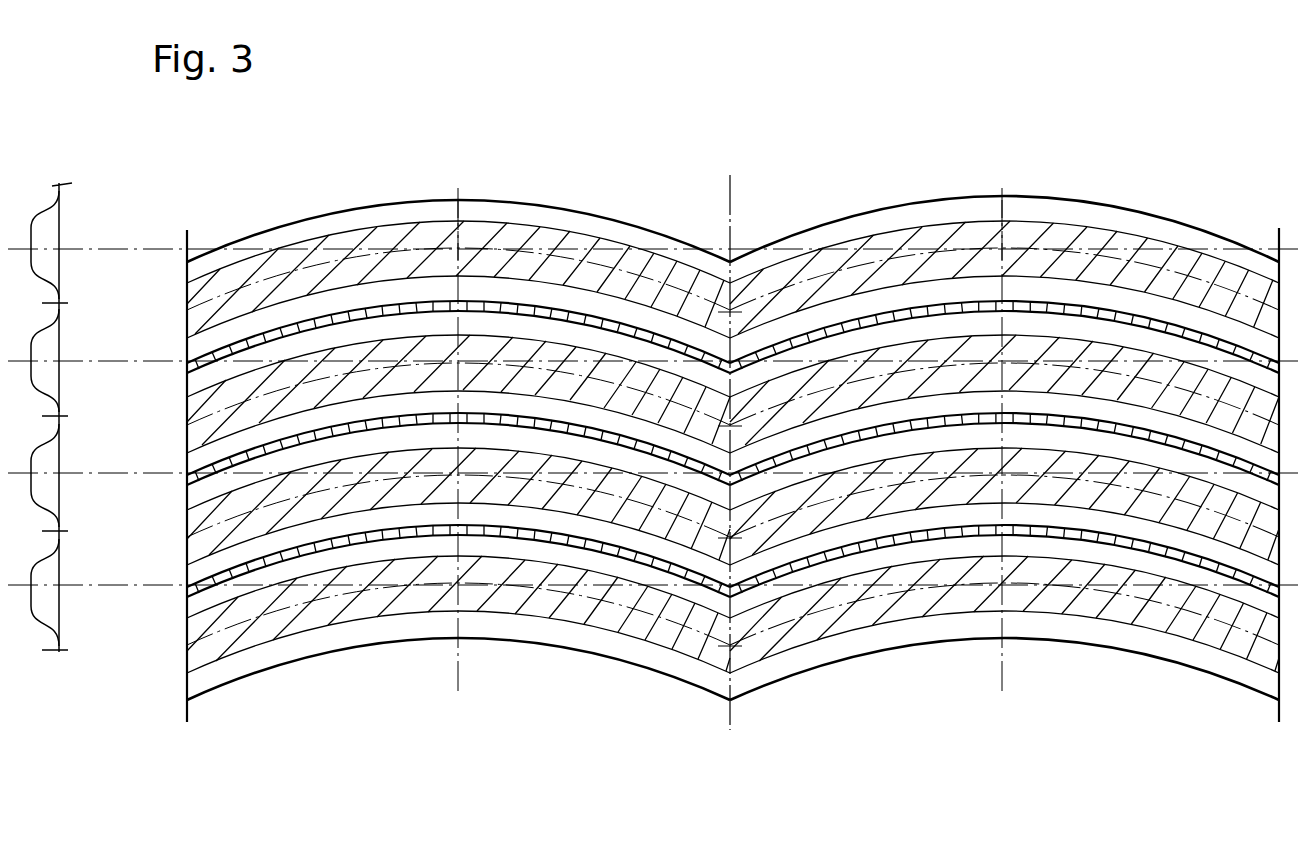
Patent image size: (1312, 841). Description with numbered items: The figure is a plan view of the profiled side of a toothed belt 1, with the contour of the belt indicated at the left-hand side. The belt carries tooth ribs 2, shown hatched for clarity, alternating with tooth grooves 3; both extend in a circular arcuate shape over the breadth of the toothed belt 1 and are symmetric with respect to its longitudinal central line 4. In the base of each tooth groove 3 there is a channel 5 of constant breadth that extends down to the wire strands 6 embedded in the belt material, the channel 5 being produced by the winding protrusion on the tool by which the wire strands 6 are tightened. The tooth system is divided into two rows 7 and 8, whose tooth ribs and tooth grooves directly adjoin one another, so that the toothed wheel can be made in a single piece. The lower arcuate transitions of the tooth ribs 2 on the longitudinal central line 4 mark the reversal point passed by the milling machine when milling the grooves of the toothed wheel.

The toothed belt 1 is at (654, 712).
The tooth ribs 2 is at (838, 252).
The tooth grooves 3 is at (636, 315).
The longitudinal central line 4 is at (730, 718).
The channel 5 is at (1044, 296).
The wire strands 6 is at (192, 478).
The first row 7 is at (409, 118).
The second row 8 is at (1058, 88).